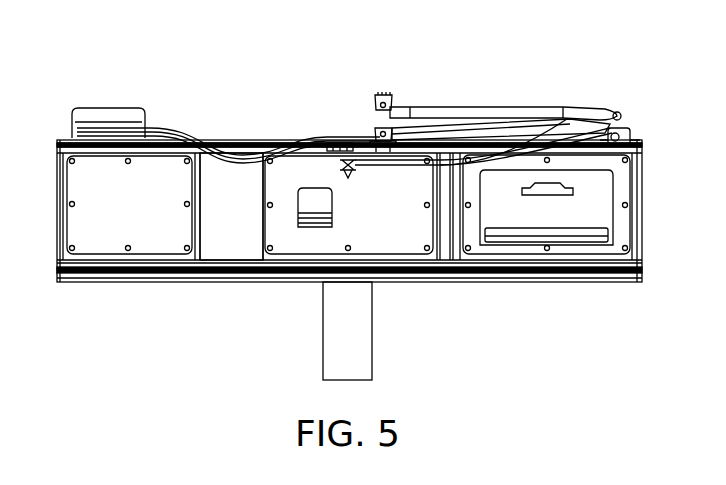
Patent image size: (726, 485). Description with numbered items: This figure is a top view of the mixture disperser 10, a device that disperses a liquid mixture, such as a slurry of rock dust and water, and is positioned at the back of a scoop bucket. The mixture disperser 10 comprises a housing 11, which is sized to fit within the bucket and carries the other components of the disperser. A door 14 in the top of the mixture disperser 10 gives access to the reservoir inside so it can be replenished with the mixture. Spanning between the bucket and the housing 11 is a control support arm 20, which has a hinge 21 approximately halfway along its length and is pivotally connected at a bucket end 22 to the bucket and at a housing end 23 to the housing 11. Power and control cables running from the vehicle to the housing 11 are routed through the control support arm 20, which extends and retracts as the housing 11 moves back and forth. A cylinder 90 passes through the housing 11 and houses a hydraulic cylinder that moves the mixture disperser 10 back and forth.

The mixture disperser 10 is at (166, 114).
The housing 11 is at (240, 215).
The door 14 is at (585, 203).
The control support arm 20 is at (505, 105).
The hinge 21 is at (617, 112).
The bucket end 22 is at (386, 92).
The housing end 23 is at (378, 131).
The cylinder 90 is at (362, 332).